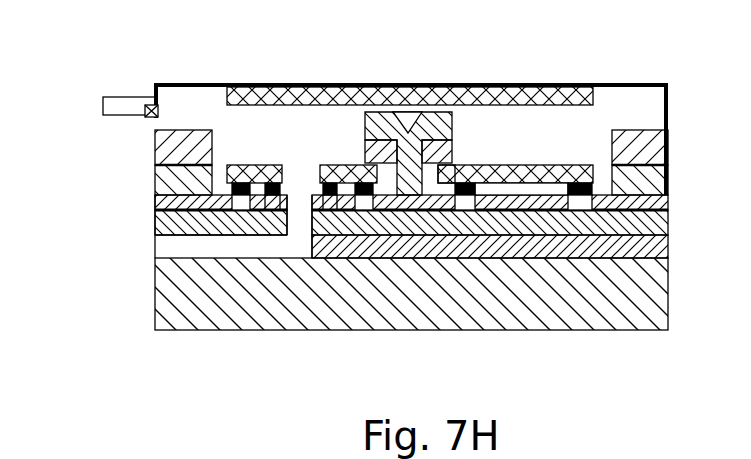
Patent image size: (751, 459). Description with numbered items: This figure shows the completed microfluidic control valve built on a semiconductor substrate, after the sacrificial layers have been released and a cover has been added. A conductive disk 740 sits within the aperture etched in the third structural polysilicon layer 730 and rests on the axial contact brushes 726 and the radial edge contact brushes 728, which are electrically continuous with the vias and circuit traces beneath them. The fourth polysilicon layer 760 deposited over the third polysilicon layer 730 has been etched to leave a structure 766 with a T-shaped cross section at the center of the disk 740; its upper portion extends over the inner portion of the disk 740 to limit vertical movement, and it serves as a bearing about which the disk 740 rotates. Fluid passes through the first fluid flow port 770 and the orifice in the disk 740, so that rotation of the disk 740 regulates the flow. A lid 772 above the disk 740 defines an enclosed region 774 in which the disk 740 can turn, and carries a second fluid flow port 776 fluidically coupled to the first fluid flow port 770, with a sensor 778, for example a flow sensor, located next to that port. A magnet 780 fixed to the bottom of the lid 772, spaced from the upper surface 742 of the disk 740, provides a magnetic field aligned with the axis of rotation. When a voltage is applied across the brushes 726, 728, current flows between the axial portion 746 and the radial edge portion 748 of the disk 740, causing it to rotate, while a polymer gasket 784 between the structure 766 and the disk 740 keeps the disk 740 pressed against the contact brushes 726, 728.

The axial contact brushes 726 is at (458, 190).
The radial edge contact brushes 728 is at (232, 190).
The poly 3 layer 730 is at (653, 182).
The disk 740 is at (535, 165).
The upper surface 742 is at (497, 165).
The axial portion 746 is at (456, 165).
The radial edge portion 748 is at (593, 167).
The poly 4 layer 760 is at (650, 152).
The structure 766 is at (405, 140).
The first fluid flow port 770 is at (302, 195).
The lid 772 is at (610, 82).
The enclosed region 774 is at (645, 110).
The second fluid flow port 776 is at (157, 100).
The sensor 778 is at (156, 113).
The magnet 780 is at (253, 93).
The gasket 784 is at (377, 150).